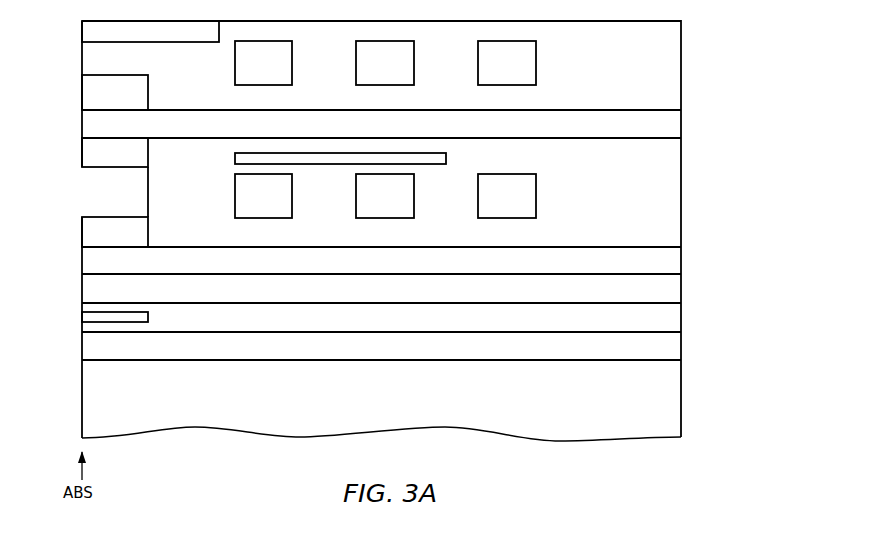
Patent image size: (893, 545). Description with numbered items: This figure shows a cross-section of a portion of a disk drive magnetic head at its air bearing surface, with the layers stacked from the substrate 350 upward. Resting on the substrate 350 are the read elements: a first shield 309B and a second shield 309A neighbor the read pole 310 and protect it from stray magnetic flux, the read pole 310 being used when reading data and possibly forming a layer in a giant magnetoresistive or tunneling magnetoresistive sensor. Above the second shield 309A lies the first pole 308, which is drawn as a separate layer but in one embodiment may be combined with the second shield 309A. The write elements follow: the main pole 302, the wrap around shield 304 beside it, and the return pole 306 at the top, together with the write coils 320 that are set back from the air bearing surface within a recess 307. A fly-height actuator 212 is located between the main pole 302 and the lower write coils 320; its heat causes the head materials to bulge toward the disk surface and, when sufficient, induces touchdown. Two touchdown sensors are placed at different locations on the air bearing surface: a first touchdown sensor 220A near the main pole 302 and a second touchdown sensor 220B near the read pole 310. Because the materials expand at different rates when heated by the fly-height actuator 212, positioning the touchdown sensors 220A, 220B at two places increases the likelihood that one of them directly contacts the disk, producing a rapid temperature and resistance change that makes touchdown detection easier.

The return pole 306 is at (82, 35).
The wrap around shield 304 is at (82, 93).
The main pole 302 is at (82, 125).
The first touchdown sensor 220A is at (82, 152).
The recess 307 is at (135, 192).
The second touchdown sensor 220B is at (82, 236).
The first pole 308 is at (82, 260).
The second shield 309A is at (82, 283).
The read pole 310 is at (82, 317).
The first shield 309B is at (82, 340).
The write coils 320 is at (542, 60).
The fly-height actuator 212 is at (446, 160).
The substrate 350 is at (572, 405).